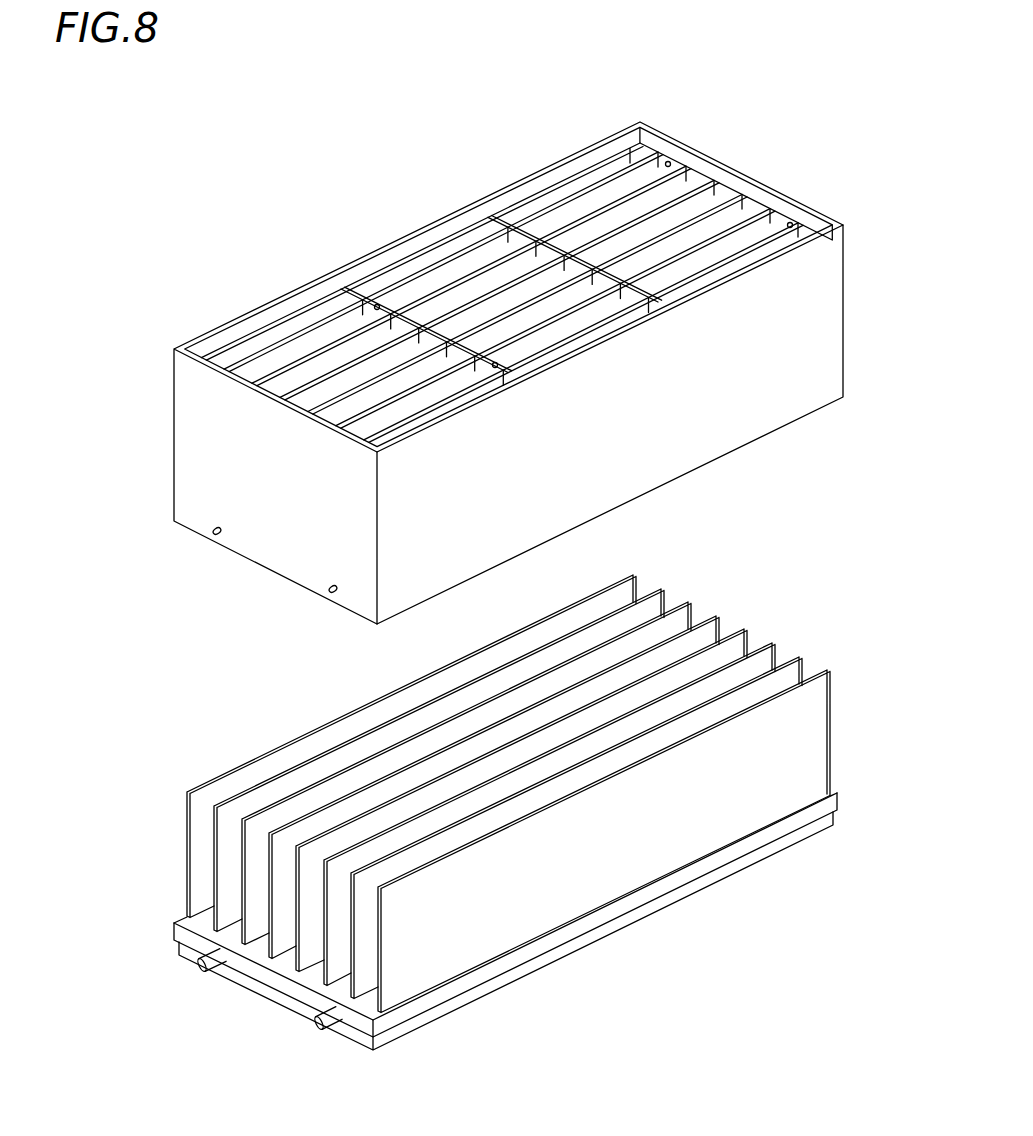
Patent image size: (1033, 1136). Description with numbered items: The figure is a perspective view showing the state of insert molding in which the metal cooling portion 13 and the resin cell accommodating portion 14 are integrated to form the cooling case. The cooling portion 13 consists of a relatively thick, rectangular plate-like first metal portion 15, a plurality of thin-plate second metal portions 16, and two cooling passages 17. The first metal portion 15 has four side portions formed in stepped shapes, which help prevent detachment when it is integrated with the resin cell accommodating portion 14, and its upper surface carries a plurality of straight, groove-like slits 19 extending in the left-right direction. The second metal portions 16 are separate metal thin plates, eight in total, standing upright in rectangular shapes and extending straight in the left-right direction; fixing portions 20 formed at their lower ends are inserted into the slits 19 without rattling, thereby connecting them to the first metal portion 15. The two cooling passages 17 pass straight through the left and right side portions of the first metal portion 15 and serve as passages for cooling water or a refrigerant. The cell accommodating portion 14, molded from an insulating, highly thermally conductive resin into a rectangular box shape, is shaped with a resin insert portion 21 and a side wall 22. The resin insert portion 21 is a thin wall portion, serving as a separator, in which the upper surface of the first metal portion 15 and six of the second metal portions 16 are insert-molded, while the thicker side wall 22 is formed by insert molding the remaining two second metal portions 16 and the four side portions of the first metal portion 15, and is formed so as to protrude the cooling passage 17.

The cooling portion 13 is at (171, 725).
The cell accommodating portion 14 is at (275, 260).
The first metal portion 15 is at (634, 900).
The second metal portions 16 is at (360, 762).
The cooling passages 17 is at (334, 1029).
The slits 19 is at (446, 987).
The fixing portions 20 is at (453, 1007).
The resin insert portion 21 is at (434, 265).
The side wall 22 is at (683, 447).